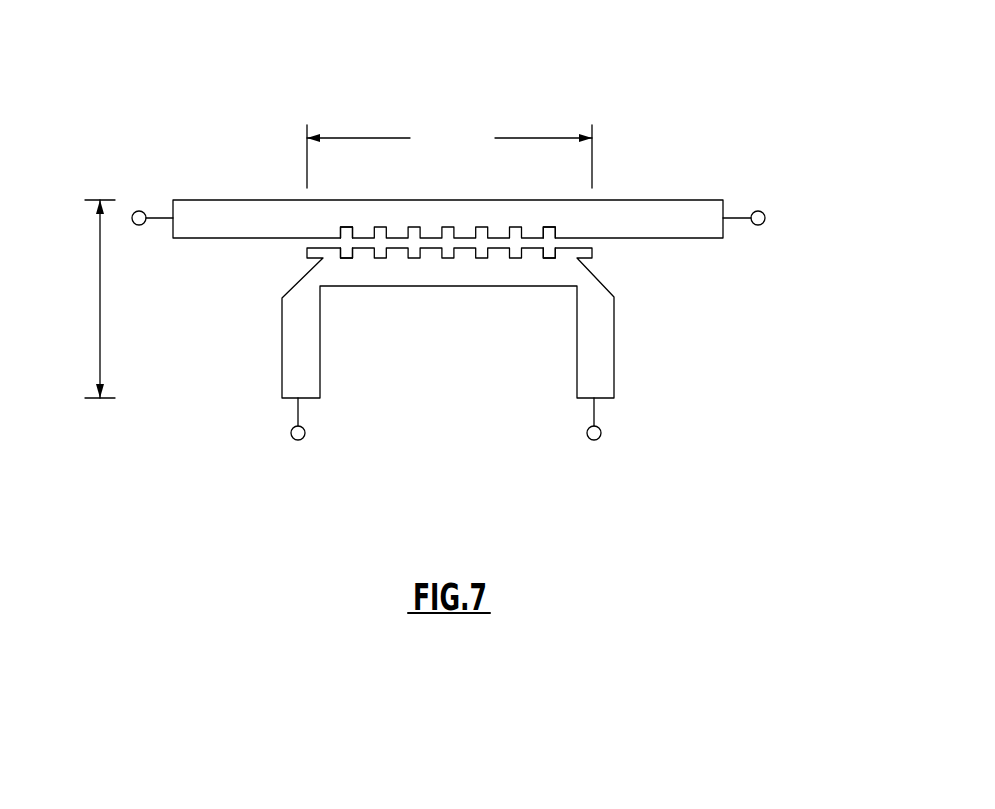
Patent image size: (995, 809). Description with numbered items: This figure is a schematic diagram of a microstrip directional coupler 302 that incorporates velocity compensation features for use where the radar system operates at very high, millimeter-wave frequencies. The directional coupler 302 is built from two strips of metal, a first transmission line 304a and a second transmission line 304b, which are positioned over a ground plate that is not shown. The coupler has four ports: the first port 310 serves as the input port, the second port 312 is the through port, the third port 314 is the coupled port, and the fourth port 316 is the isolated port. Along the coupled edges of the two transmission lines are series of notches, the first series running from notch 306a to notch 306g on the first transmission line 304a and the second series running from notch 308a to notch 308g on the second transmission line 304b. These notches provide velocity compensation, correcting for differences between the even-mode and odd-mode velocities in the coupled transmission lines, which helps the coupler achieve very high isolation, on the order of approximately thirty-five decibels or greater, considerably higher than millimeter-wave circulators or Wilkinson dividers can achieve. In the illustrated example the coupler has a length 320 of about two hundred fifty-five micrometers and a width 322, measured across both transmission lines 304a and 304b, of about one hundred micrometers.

The microstrip directional coupler 302 is at (748, 75).
The first transmission line 304a is at (667, 200).
The second transmission line 304b is at (615, 358).
The notch 306a is at (346, 227).
The notch 306g is at (549, 227).
The notch 308a is at (347, 258).
The notch 308g is at (550, 258).
The first port 310 is at (763, 224).
The second port 312 is at (139, 211).
The third port 314 is at (601, 436).
The fourth port 316 is at (291, 434).
The length 320 is at (533, 118).
The width 322 is at (70, 266).